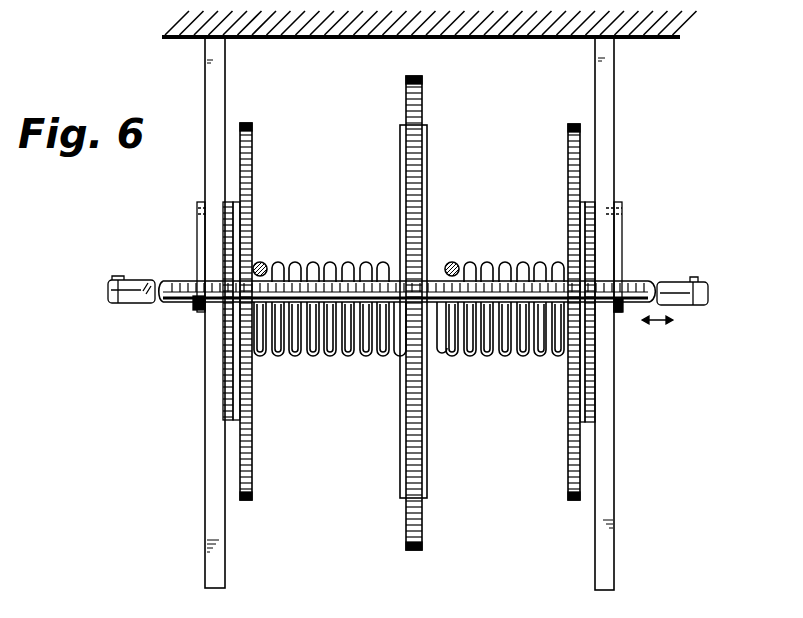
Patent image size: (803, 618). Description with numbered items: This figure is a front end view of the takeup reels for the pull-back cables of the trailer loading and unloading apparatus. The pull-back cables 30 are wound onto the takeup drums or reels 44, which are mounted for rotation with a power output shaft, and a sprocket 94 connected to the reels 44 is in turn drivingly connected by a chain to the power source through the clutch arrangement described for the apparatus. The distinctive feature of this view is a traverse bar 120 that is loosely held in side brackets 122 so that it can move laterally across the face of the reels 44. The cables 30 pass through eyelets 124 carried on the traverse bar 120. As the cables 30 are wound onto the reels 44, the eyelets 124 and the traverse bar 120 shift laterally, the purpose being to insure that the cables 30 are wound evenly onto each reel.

The pull-back cables 30 is at (281, 358).
The takeup drums or reels 44 is at (253, 158).
The sprocket 94 is at (425, 97).
The traverse bar 120 is at (673, 280).
The side brackets 122 is at (201, 243).
The eyelets 124 is at (263, 260).